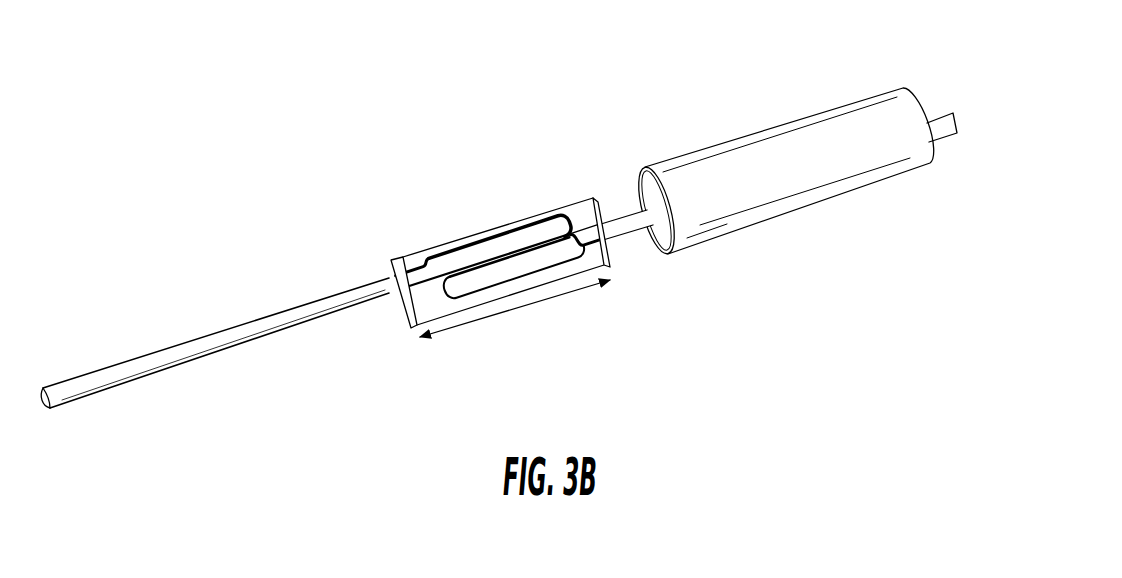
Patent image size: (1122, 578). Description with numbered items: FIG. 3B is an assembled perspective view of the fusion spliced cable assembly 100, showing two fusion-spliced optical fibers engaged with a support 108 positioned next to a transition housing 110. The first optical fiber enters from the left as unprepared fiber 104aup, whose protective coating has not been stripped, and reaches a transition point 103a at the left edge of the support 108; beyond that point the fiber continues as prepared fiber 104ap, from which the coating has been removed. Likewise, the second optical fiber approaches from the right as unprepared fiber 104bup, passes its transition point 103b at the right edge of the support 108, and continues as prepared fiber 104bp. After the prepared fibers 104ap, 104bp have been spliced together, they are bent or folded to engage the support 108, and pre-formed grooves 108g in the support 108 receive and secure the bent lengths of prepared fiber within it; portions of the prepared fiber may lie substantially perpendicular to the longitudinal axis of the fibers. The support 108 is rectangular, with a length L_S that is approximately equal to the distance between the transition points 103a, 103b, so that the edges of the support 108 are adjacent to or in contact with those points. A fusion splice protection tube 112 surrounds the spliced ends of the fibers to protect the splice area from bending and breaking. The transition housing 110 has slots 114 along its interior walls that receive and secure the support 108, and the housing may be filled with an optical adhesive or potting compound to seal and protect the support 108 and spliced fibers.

The fusion spliced cable assembly 100 is at (499, 228).
The transition point of the first optical fiber 103a is at (397, 314).
The transition point of the second optical fiber 103b is at (609, 244).
The unprepared fiber of the first optical fiber 104aup is at (269, 293).
The prepared fiber of the first optical fiber 104ap is at (430, 251).
The unprepared fiber of the second optical fiber 104bup is at (611, 228).
The prepared fiber of the second optical fiber 104bp is at (540, 262).
The support 108 is at (465, 234).
The grooves 108g is at (493, 233).
The transition housing 110 is at (693, 152).
The fusion splice protection tube 112 is at (515, 249).
The slots 114 is at (667, 255).